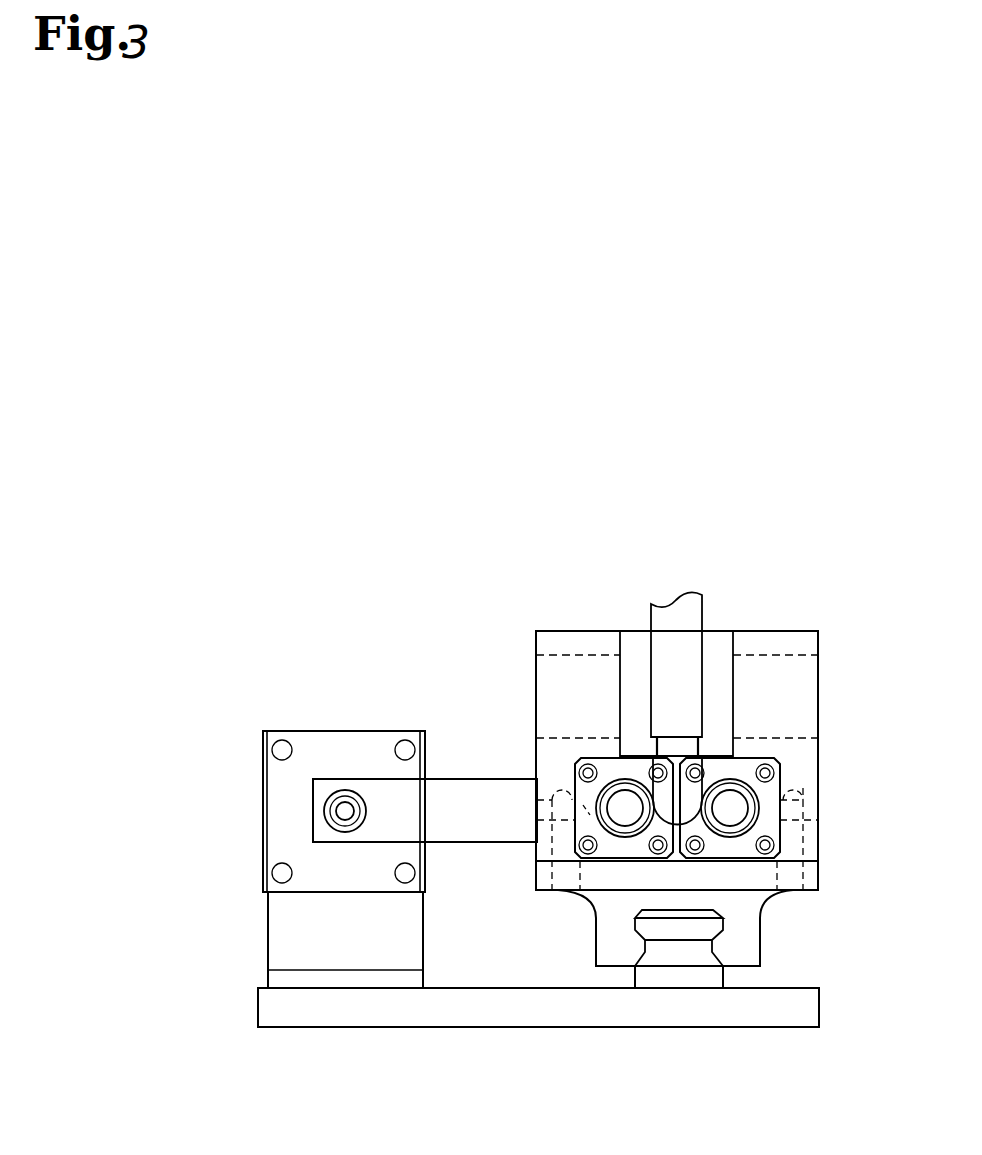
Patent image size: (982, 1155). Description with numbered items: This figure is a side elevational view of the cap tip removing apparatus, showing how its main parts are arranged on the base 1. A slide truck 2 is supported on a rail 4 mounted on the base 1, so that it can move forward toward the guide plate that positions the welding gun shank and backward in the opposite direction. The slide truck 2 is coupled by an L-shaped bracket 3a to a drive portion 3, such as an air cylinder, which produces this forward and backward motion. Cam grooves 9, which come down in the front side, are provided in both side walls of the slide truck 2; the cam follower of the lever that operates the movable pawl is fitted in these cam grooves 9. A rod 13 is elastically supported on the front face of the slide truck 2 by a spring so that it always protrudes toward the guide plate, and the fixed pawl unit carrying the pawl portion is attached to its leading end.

The base 1 is at (258, 1013).
The slide truck 2 is at (818, 772).
The drive portion 3 is at (343, 731).
The L-shaped bracket 3a is at (458, 778).
The rail 4 is at (722, 981).
The cam grooves 9 is at (797, 656).
The rod 13 is at (737, 810).